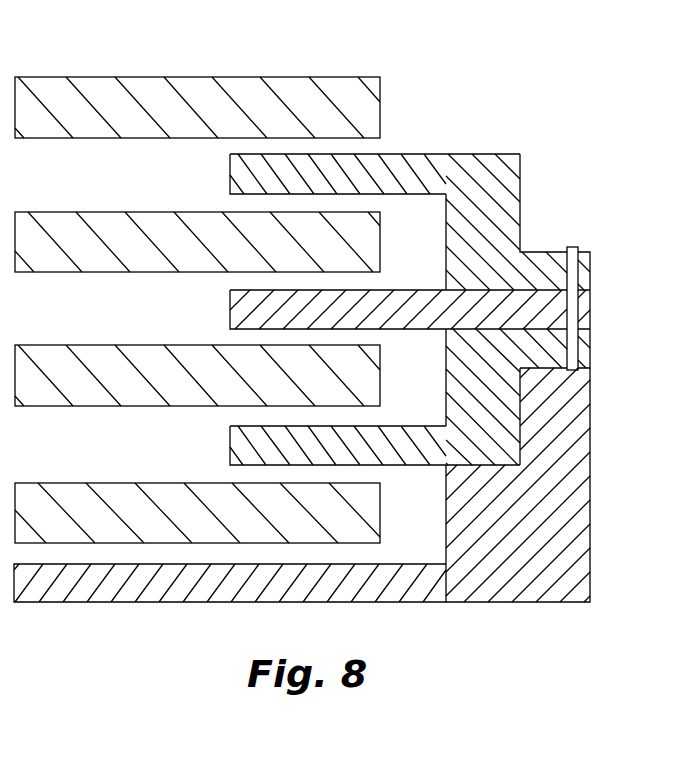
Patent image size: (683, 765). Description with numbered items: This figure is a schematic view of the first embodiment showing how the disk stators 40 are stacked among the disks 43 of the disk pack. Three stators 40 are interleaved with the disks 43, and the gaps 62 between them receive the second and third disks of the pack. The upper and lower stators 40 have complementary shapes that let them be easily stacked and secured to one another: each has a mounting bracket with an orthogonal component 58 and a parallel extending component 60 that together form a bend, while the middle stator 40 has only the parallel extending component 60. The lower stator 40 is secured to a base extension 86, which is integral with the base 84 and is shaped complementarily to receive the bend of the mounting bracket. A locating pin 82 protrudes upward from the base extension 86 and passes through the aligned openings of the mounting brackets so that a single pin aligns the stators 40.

The disk stator 40 is at (485, 120).
The disk 43 is at (365, 115).
The orthogonal component 58 is at (505, 195).
The parallel extending component 60 is at (540, 262).
The gap 62 is at (423, 243).
The locating pin 82 is at (572, 250).
The base 84 is at (407, 582).
The base extension 86 is at (478, 485).